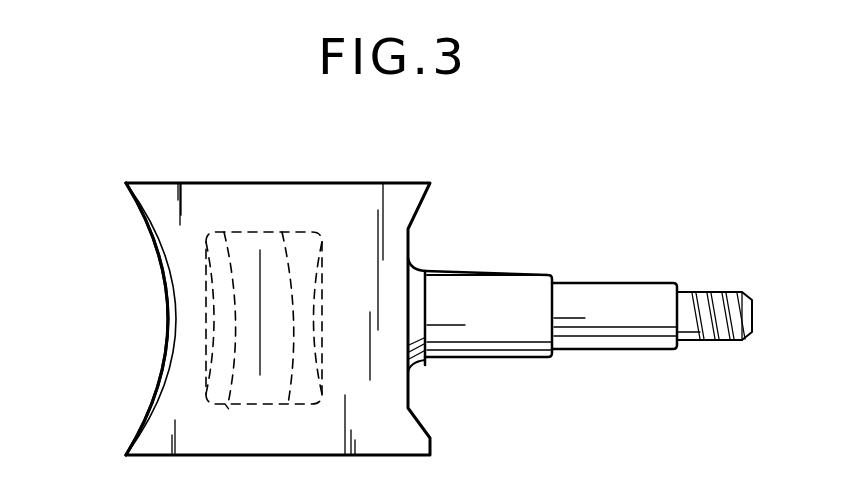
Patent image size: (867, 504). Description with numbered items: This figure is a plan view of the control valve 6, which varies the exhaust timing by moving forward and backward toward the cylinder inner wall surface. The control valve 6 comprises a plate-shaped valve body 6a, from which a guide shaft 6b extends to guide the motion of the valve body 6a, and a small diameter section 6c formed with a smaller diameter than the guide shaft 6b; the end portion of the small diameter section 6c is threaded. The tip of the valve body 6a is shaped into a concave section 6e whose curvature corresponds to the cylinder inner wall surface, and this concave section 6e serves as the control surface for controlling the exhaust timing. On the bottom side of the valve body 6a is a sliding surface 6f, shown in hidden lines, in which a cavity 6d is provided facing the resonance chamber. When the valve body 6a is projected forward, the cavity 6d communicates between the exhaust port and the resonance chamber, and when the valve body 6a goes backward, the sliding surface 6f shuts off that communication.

The control valve 6 is at (490, 200).
The valve body 6a is at (178, 244).
The guide shaft 6b is at (508, 287).
The small diameter section 6c is at (632, 295).
The cavity 6d is at (208, 386).
The concave section 6e is at (168, 308).
The sliding surface 6f is at (231, 412).